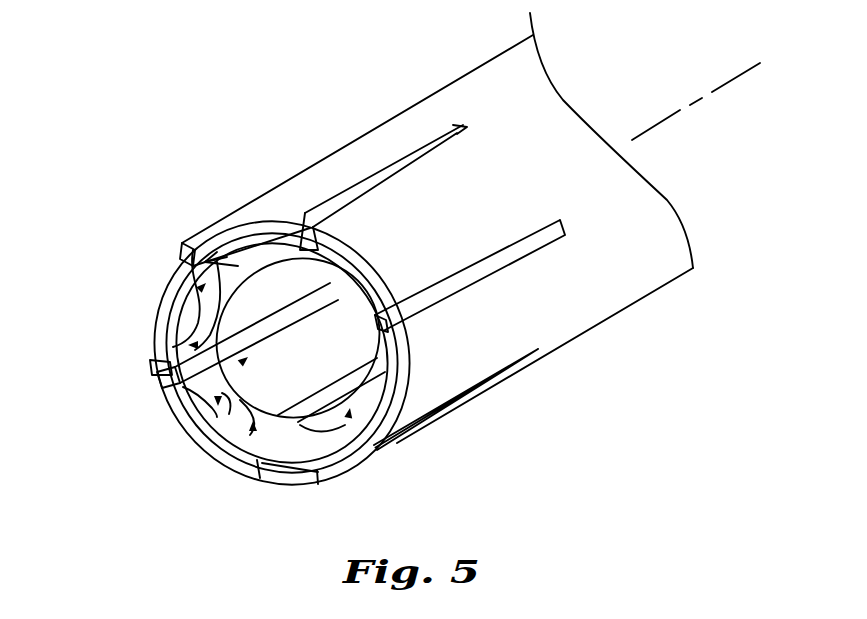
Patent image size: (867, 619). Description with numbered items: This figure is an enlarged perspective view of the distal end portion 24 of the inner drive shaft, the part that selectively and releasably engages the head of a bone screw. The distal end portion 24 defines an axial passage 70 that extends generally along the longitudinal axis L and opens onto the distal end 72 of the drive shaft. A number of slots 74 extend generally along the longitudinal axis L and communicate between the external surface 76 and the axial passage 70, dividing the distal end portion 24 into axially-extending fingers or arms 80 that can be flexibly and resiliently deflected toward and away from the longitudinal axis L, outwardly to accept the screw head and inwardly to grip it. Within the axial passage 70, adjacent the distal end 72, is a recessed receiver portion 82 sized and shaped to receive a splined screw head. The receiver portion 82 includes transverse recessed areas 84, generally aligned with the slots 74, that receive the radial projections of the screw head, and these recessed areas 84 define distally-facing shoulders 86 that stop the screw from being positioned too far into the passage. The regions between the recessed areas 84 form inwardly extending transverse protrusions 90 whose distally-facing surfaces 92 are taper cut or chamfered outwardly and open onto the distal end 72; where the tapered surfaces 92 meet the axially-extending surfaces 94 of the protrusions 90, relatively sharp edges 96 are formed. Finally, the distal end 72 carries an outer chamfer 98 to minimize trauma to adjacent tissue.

The distal end portion 24 is at (385, 60).
The axial passage 70 is at (160, 366).
The distal end 72 is at (273, 468).
The slots 74 is at (303, 212).
The external surface 76 is at (500, 170).
The arms 80 is at (381, 195).
The receiver portion 82 is at (173, 347).
The recessed areas 84 is at (235, 437).
The distally-facing shoulders 86 is at (290, 467).
The transverse protrusions 90 is at (180, 273).
The distally-facing surfaces 92 is at (212, 413).
The axially-extending surfaces 94 is at (330, 450).
The edges 96 is at (190, 325).
The outer chamfer 98 is at (397, 392).
The longitudinal axis L is at (728, 85).